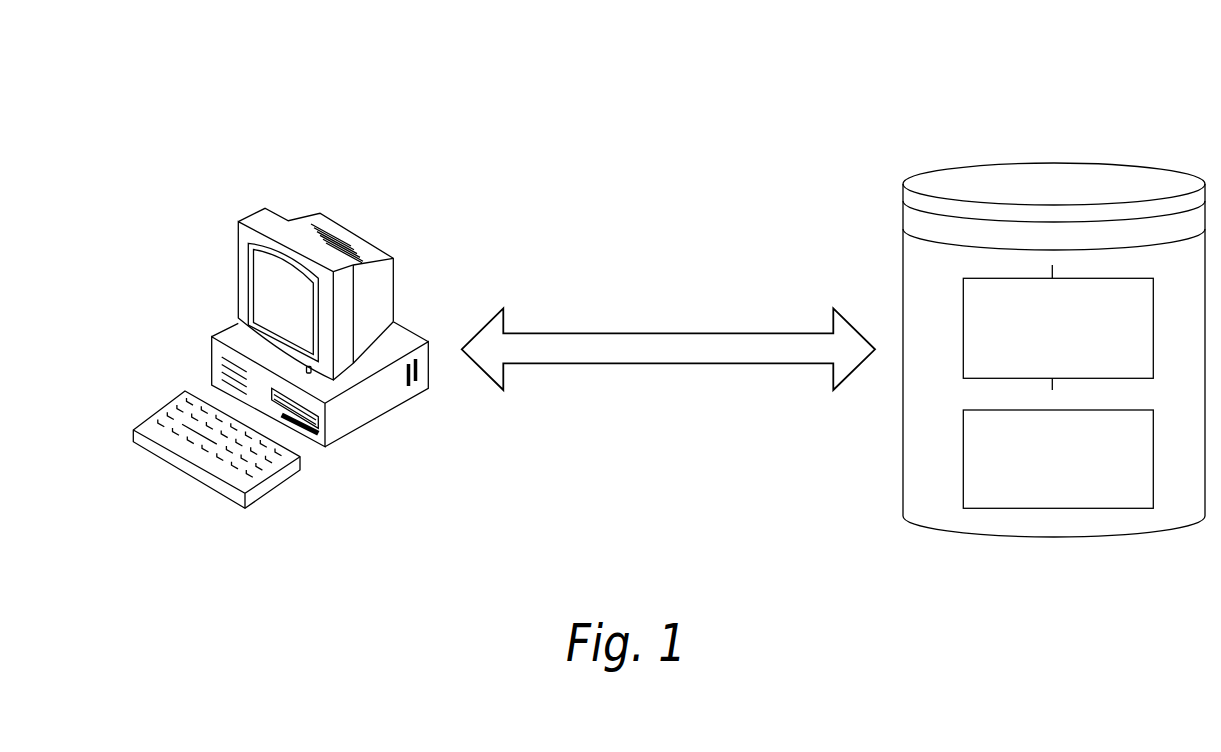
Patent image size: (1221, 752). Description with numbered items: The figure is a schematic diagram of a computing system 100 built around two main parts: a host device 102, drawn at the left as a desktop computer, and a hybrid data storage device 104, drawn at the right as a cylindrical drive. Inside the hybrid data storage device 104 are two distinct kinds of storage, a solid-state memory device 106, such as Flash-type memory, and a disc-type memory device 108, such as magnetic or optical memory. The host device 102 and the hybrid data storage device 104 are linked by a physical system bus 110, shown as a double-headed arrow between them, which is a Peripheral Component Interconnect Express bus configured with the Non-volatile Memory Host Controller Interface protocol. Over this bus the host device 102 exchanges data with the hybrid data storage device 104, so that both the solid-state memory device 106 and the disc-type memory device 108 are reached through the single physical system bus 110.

The computing system 100 is at (863, 99).
The host device 102 is at (332, 220).
The hybrid data storage device 104 is at (1078, 162).
The solid-state memory device 106 is at (1137, 350).
The disc-type memory device 108 is at (1138, 486).
The physical system bus 110 is at (623, 333).